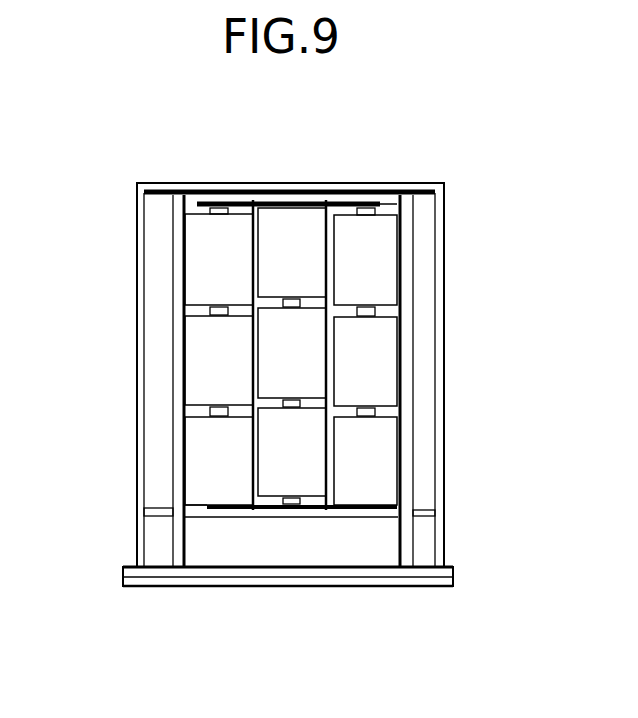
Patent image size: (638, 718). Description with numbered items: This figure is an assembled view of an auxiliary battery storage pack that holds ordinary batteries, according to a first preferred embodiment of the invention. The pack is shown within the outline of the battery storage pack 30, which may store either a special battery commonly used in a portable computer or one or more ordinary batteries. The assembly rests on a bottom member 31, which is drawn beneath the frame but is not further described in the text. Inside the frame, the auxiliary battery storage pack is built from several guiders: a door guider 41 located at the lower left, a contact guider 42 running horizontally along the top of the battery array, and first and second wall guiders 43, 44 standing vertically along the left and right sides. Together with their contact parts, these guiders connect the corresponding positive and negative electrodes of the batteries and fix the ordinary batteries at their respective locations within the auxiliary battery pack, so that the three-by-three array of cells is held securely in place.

The battery storage pack 30 is at (440, 422).
The base plate 31 is at (280, 584).
The door guider 41 is at (158, 511).
The contact guider 42 is at (329, 203).
The first wall guider 43 is at (175, 362).
The second wall guider 44 is at (405, 326).